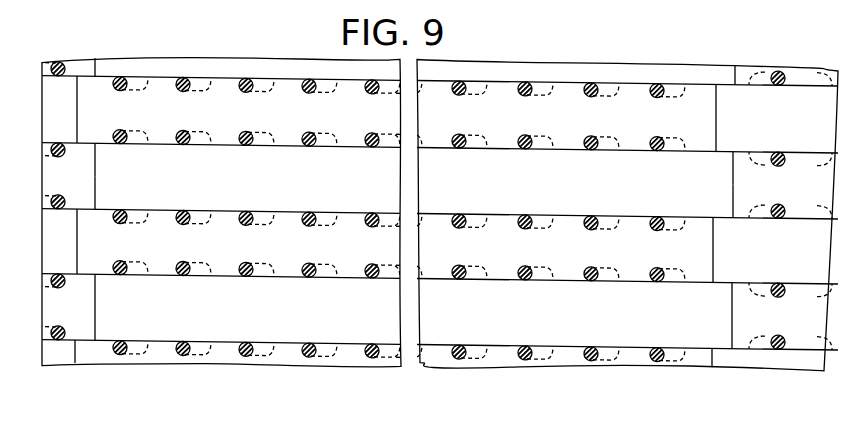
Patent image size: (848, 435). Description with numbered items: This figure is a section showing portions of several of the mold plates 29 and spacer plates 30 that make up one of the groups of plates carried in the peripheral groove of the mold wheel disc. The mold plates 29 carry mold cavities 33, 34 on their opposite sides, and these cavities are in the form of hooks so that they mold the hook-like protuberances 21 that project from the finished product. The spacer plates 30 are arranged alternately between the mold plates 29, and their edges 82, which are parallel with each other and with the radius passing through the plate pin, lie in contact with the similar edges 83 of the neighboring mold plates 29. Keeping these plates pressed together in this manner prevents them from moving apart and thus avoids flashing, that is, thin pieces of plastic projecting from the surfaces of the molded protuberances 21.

The hook-like protuberances 21 is at (305, 143).
The mold plates 29 is at (73, 183).
The spacer plates 30 is at (58, 120).
The mold cavities 33 is at (199, 135).
The mold cavities 34 is at (195, 93).
The edges of spacer plates 82 is at (98, 165).
The edges of mold plates 83 is at (96, 192).